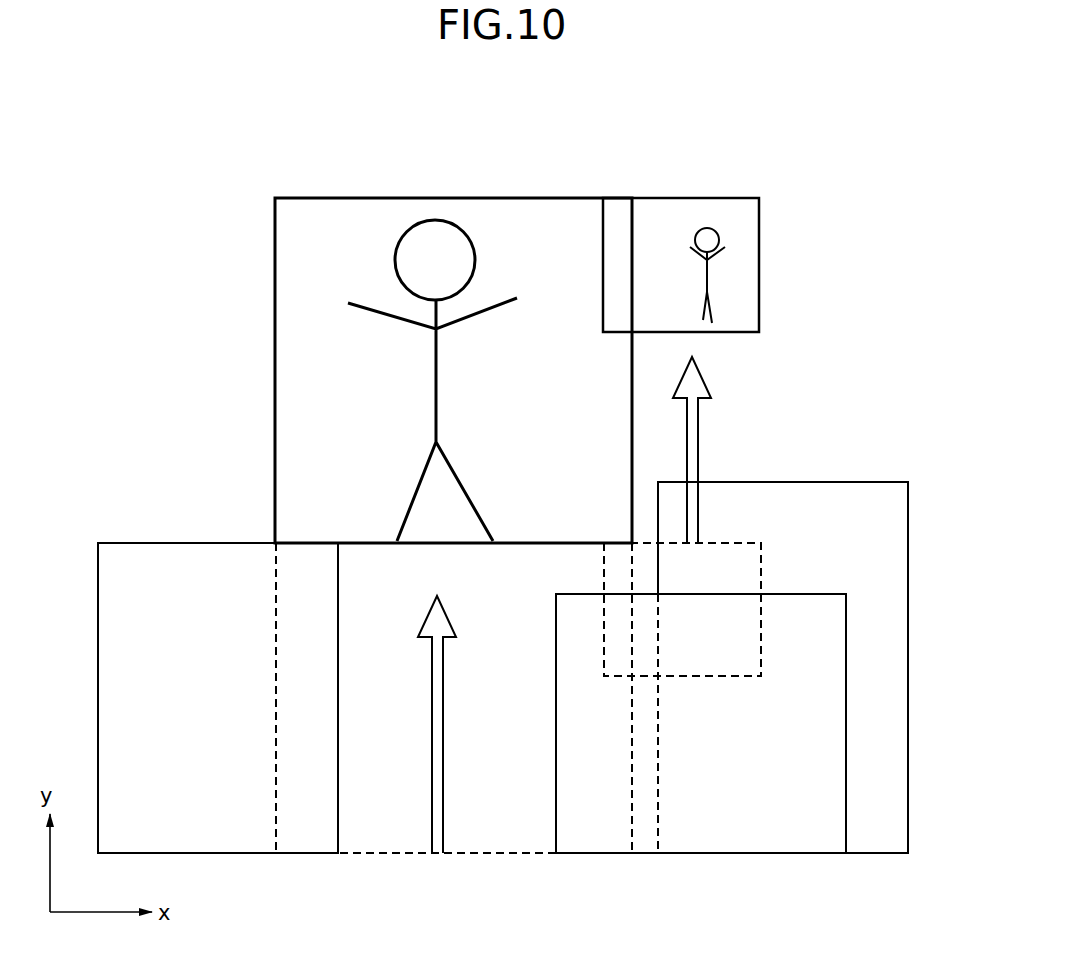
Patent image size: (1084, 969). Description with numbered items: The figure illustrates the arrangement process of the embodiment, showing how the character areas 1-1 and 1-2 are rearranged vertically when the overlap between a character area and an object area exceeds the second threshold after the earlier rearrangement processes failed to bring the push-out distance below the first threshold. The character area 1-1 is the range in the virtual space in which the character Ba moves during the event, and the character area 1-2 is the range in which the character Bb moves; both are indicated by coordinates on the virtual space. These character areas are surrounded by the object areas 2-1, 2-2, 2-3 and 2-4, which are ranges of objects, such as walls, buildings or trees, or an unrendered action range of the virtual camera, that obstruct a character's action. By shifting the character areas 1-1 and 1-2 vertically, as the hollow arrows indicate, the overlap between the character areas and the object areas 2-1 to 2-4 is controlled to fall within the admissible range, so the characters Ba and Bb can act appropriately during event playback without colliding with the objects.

The character area 1-1 is at (380, 192).
The character area 1-2 is at (670, 196).
The object area 2-1 is at (172, 508).
The object area 2-2 is at (852, 728).
The object area 2-3 is at (248, 667).
The object area 2-4 is at (818, 478).
The character Ba is at (478, 313).
The character Bb is at (700, 263).